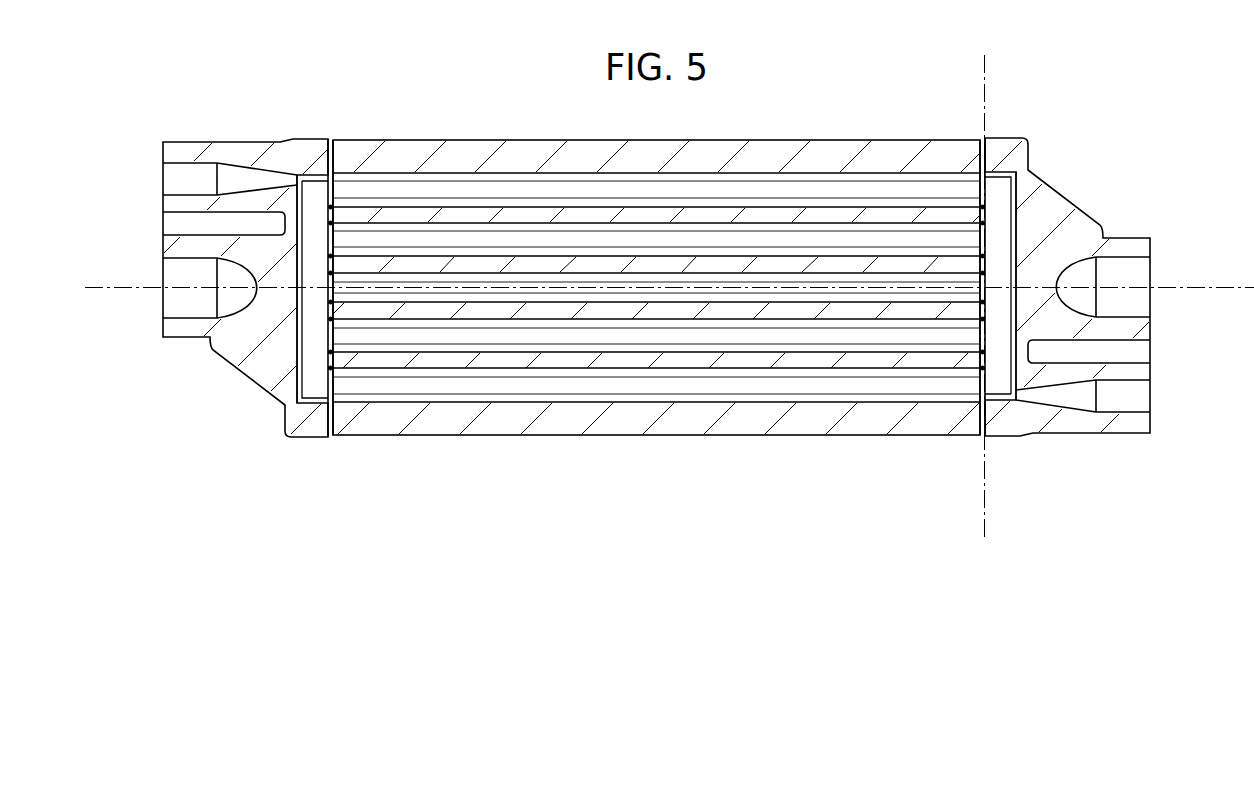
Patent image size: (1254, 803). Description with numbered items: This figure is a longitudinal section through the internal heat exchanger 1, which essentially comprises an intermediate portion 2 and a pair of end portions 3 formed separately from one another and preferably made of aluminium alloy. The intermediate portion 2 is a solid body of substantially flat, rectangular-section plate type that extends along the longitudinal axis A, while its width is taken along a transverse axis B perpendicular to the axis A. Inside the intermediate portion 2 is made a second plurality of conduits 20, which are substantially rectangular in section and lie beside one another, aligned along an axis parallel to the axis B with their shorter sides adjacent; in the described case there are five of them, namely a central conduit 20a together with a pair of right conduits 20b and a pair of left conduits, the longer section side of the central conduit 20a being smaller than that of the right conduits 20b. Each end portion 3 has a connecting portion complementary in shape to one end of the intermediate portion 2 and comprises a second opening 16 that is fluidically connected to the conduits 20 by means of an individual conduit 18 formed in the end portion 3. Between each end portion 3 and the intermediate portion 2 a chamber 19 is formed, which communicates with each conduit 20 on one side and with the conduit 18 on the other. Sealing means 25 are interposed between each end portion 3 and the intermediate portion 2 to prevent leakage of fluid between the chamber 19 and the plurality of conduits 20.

The internal heat exchanger 1 is at (849, 101).
The intermediate portion 2 is at (773, 138).
The end portion 3 is at (303, 139).
The second opening 16 is at (173, 177).
The individual conduit 18 is at (248, 177).
The chamber 19 is at (287, 403).
The conduits 20 is at (417, 235).
The central conduit 20a is at (725, 290).
The right conduits 20b is at (502, 340).
The sealing means 25 is at (980, 138).
The longitudinal axis A is at (1188, 287).
The transverse axis B is at (988, 88).